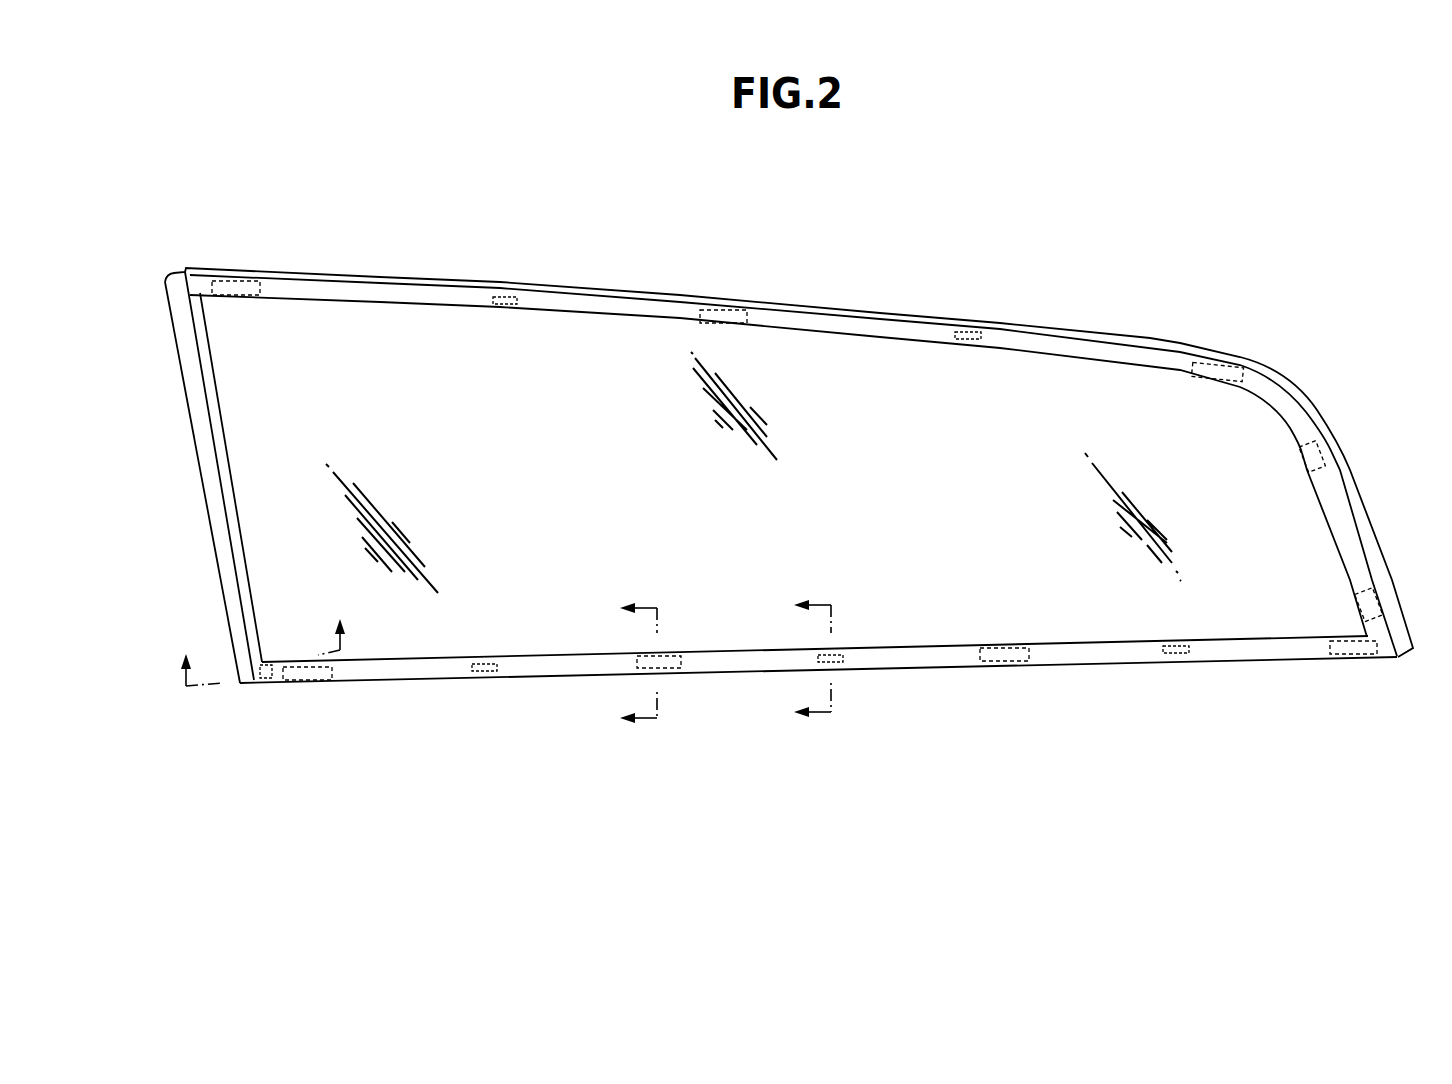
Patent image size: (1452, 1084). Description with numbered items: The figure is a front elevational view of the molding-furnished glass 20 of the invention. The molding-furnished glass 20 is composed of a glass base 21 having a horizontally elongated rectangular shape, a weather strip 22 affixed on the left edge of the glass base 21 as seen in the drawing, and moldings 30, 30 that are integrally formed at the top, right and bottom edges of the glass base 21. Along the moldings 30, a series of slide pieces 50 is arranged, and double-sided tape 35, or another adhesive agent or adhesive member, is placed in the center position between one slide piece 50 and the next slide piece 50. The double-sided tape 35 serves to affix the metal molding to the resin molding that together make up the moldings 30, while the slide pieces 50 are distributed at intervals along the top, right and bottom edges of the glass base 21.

The molding-furnished glass 20 is at (1112, 257).
The glass base 21 is at (571, 405).
The weather strip 22 is at (212, 524).
The molding 30 is at (867, 302).
The double-sided tape 35 is at (507, 298).
The slide piece 50 is at (240, 283).